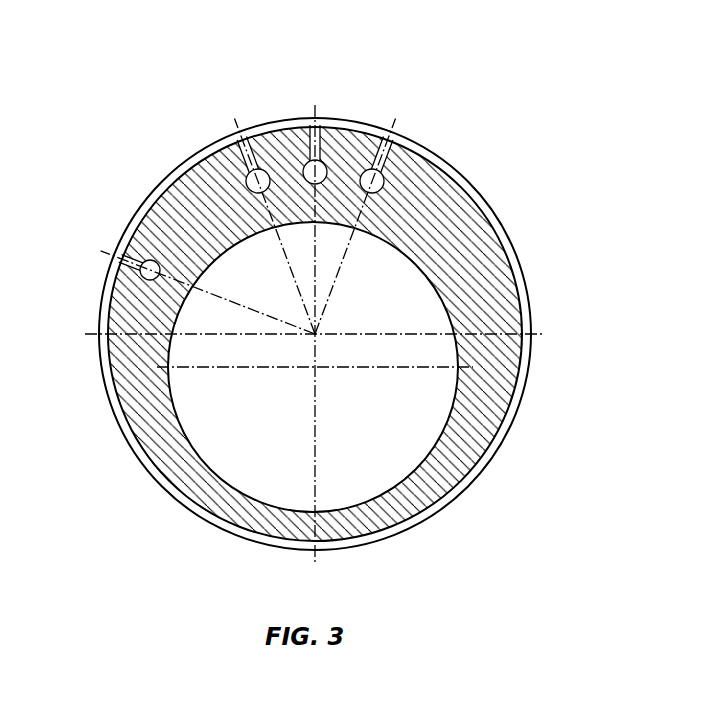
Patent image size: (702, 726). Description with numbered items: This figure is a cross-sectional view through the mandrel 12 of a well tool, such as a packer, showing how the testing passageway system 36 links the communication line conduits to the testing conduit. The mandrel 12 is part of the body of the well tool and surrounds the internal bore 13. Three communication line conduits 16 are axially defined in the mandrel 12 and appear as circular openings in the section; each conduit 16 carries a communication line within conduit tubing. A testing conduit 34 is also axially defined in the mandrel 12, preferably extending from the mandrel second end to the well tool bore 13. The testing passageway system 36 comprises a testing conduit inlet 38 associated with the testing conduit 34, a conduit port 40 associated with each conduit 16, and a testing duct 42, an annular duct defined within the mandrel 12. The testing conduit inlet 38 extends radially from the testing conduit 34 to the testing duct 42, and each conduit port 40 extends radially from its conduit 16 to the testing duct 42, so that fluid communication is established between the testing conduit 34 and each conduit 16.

The testing passageway system 36 is at (131, 113).
The mandrel 12 is at (505, 278).
The internal bore 13 is at (391, 450).
The communication line conduit 16 is at (313, 162).
The conduit port 40 is at (242, 153).
The testing duct 42 is at (158, 180).
The testing conduit 34 is at (128, 240).
The testing conduit inlet 38 is at (115, 268).